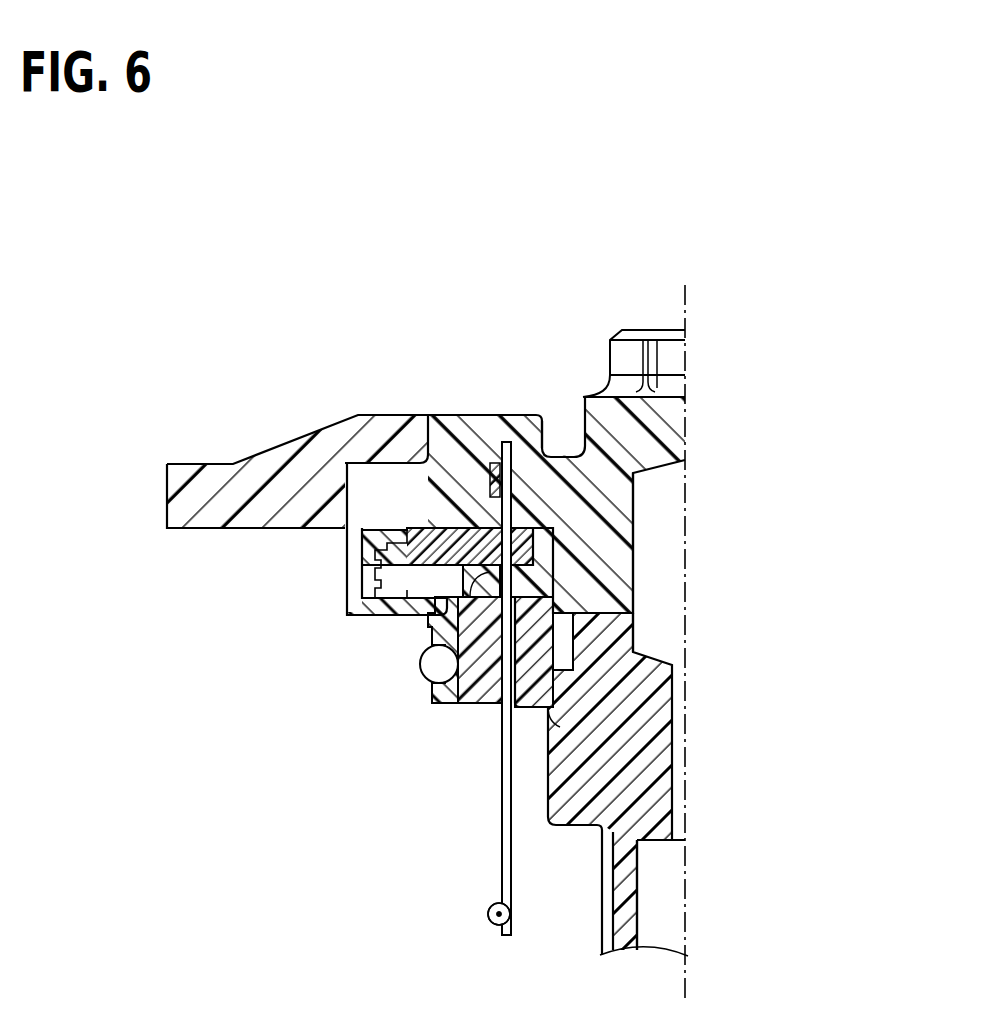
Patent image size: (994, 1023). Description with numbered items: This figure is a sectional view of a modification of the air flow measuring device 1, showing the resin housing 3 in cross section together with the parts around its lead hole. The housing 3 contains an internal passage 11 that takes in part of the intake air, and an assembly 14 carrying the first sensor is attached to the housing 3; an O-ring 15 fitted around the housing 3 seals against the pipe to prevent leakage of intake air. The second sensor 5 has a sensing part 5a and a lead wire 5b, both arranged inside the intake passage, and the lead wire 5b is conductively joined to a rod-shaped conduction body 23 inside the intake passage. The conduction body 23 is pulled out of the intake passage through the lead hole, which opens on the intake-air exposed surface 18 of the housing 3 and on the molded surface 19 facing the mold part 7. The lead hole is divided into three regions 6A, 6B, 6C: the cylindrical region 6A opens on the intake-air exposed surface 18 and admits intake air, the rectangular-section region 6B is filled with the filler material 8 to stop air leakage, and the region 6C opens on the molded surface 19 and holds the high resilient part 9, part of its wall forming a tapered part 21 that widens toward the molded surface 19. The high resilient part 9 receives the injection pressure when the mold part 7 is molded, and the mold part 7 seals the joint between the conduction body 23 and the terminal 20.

The air flow measuring device 1 is at (318, 348).
The housing 3 is at (570, 847).
The second sensor 5 is at (390, 898).
The sensing part 5a is at (494, 924).
The lead wire 5b is at (488, 913).
The region 6A is at (503, 707).
The region 6B is at (447, 618).
The region 6C is at (525, 525).
The mold part 7 is at (523, 452).
The filler material 8 is at (378, 573).
The high resilient part 9 is at (437, 520).
The internal passage 11 is at (672, 873).
The assembly 14 is at (670, 514).
The O-ring 15 is at (436, 668).
The intake-air exposed surface 18 is at (577, 719).
The molded surface 19 is at (532, 516).
The terminal 20 is at (472, 528).
The tapered part 21 is at (440, 527).
The conduction body 23 is at (506, 816).